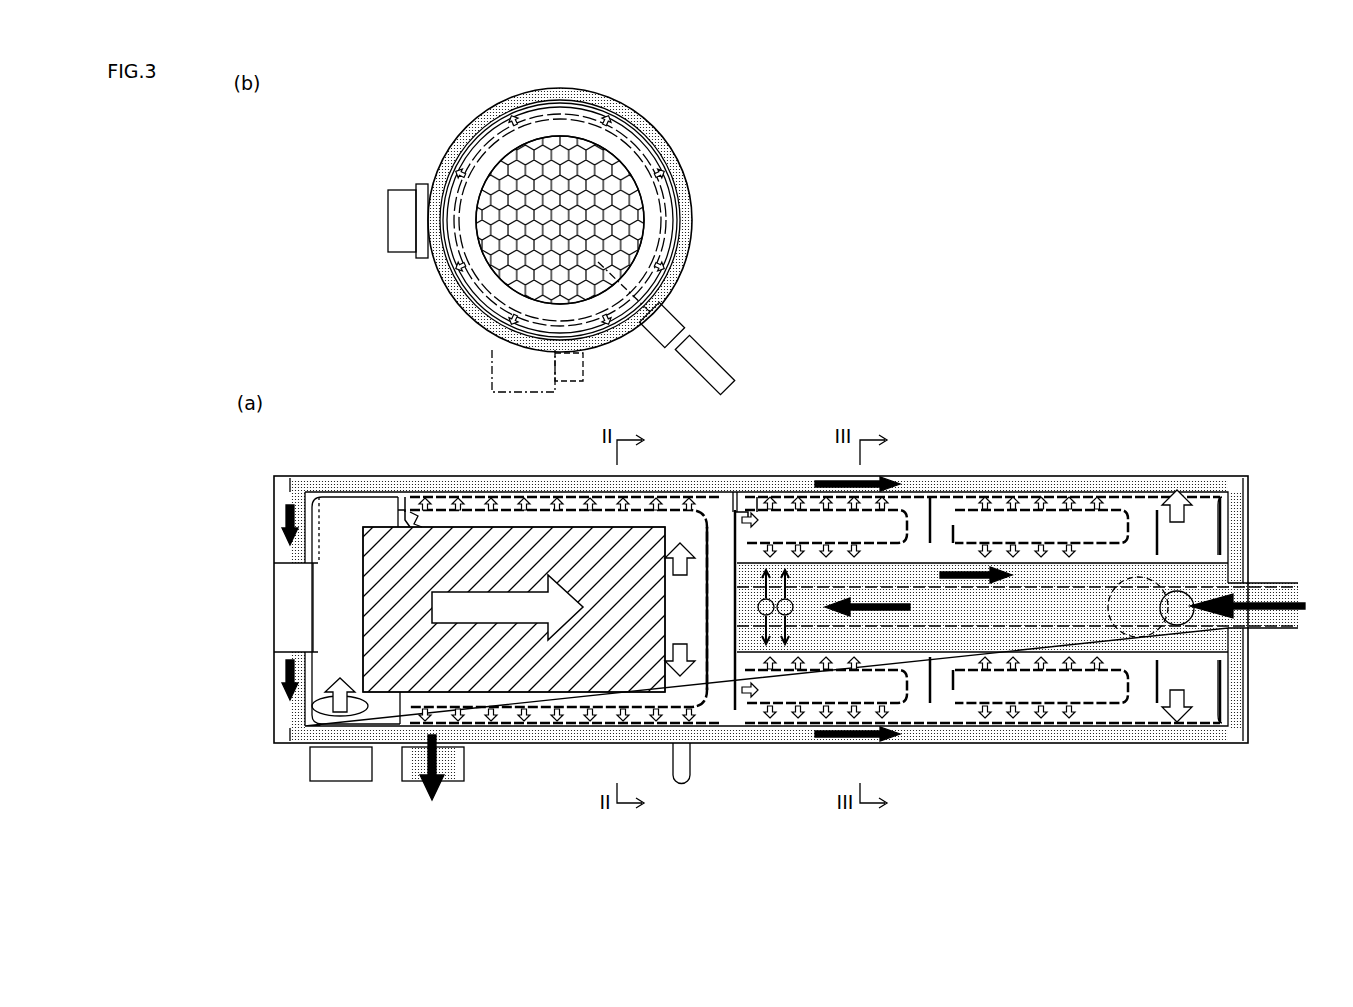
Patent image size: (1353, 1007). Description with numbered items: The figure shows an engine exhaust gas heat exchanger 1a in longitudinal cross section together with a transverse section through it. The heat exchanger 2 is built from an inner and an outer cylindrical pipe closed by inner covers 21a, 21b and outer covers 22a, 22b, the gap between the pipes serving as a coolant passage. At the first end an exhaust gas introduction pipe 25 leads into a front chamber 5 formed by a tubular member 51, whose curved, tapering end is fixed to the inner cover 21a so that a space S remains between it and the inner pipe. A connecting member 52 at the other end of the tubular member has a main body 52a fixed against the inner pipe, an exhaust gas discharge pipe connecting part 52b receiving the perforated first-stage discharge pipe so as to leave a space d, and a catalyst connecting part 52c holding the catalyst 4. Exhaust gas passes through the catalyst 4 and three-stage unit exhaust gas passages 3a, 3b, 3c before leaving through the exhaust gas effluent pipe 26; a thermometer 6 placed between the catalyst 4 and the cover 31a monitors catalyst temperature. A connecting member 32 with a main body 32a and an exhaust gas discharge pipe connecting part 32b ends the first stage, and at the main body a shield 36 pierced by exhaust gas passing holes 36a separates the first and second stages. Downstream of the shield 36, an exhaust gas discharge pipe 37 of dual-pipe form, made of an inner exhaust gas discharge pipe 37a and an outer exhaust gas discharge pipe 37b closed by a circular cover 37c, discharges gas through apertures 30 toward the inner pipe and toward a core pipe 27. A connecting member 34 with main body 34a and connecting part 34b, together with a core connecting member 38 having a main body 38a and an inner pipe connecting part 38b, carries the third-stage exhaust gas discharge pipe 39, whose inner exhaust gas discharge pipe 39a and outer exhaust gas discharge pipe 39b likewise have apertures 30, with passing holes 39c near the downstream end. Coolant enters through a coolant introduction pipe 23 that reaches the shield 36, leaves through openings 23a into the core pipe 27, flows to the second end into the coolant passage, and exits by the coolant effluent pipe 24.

The engine exhaust gas heat exchanger 1a is at (300, 107).
The heat exchanger 2 is at (628, 108).
The unit exhaust gas passage 3a is at (600, 790).
The unit exhaust gas passage 3b is at (935, 725).
The unit exhaust gas passage 3c is at (1150, 725).
The catalyst 4 is at (500, 172).
The front chamber 5 is at (360, 505).
The thermometer 6 is at (708, 360).
The inner cover 21a is at (285, 672).
The inner cover 21b is at (1245, 678).
The outer cover 22a is at (285, 528).
The outer cover 22b is at (1245, 515).
The coolant introduction pipe 23 is at (1268, 583).
The openings 23a is at (772, 620).
The coolant effluent pipe 24 is at (585, 373).
The exhaust gas introduction pipe 25 is at (490, 380).
The exhaust gas effluent pipe 26 is at (395, 193).
The core pipe 27 is at (1153, 560).
The apertures 30 is at (660, 190).
The cover 31a is at (700, 512).
The connecting member 32 is at (742, 500).
The main body 32a is at (745, 510).
The exhaust gas discharge pipe connecting part 32b is at (760, 500).
The connecting member 34 is at (1052, 436).
The main body 34a is at (955, 500).
The exhaust gas discharge pipe connecting part 34b is at (990, 498).
The shield 36 is at (730, 510).
The exhaust gas passing holes 36a is at (760, 522).
The exhaust gas discharge pipe 37 is at (975, 440).
The inner exhaust gas discharge pipe 37a is at (897, 492).
The outer exhaust gas discharge pipe 37b is at (915, 520).
The circular cover 37c is at (932, 497).
The core connecting member 38 is at (960, 785).
The main body 38a is at (960, 725).
The inner pipe connecting part 38b is at (1002, 722).
The exhaust gas discharge pipe 39 is at (1140, 418).
The inner exhaust gas discharge pipe 39a is at (1102, 495).
The outer exhaust gas discharge pipe 39b is at (1120, 495).
The passing holes 39c is at (1197, 497).
The tubular member 51 is at (350, 497).
The connecting member 52 is at (420, 745).
The main body 52a is at (403, 508).
The exhaust gas discharge pipe connecting part 52b is at (407, 497).
The catalyst connecting part 52c is at (418, 514).
The space S is at (326, 497).
The space d is at (548, 497).